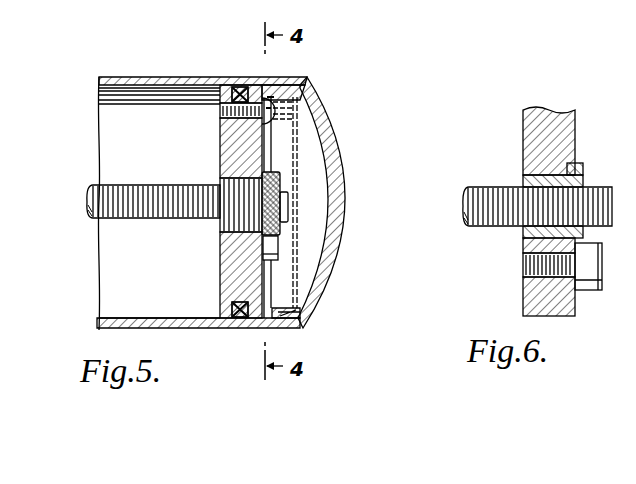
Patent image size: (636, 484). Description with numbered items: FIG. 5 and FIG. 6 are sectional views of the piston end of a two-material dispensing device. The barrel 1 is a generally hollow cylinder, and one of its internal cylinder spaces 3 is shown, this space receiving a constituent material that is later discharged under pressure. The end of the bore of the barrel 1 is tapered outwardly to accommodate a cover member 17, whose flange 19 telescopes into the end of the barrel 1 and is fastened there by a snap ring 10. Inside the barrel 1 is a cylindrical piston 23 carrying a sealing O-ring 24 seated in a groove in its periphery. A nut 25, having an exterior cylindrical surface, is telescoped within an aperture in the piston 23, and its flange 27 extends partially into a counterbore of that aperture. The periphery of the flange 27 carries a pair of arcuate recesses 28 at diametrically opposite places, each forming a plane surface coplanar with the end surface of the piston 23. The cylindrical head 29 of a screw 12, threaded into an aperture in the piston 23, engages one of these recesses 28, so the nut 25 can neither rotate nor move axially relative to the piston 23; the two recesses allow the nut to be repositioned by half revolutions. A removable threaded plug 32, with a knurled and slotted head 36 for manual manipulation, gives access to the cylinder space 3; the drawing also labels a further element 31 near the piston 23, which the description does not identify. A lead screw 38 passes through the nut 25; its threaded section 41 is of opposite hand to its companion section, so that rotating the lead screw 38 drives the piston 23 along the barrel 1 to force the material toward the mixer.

In FIG. 5, the barrel 1 is at (178, 75).
In FIG. 5, the cylinder space 3 is at (136, 310).
In FIG. 5, the snap ring 10 is at (278, 92).
In FIG. 6, the screw 12 is at (523, 270).
In FIG. 5, the cover member 17 is at (330, 166).
In FIG. 5, the flange 19 is at (283, 320).
In FIG. 6, the piston 23 is at (578, 118).
In FIG. 5, the sealing O-ring 24 is at (240, 318).
In FIG. 5, the nut 25 is at (218, 280).
In FIG. 6, the nut 25 is at (523, 181).
In FIG. 6, the flange 27 is at (584, 236).
In FIG. 6, the arcuate recess 28 is at (579, 170).
In FIG. 5, the cylindrical head 29 is at (272, 245).
In FIG. 6, the cylindrical head 29 is at (588, 272).
In FIG. 5, the knurled band 31 is at (220, 111).
In FIG. 5, the threaded plug 32 is at (222, 182).
In FIG. 5, the knurled and slotted head 36 is at (270, 185).
In FIG. 5, the lead screw 38 is at (153, 222).
In FIG. 6, the lead screw 38 is at (497, 229).
In FIG. 6, the threaded section 41 is at (471, 189).